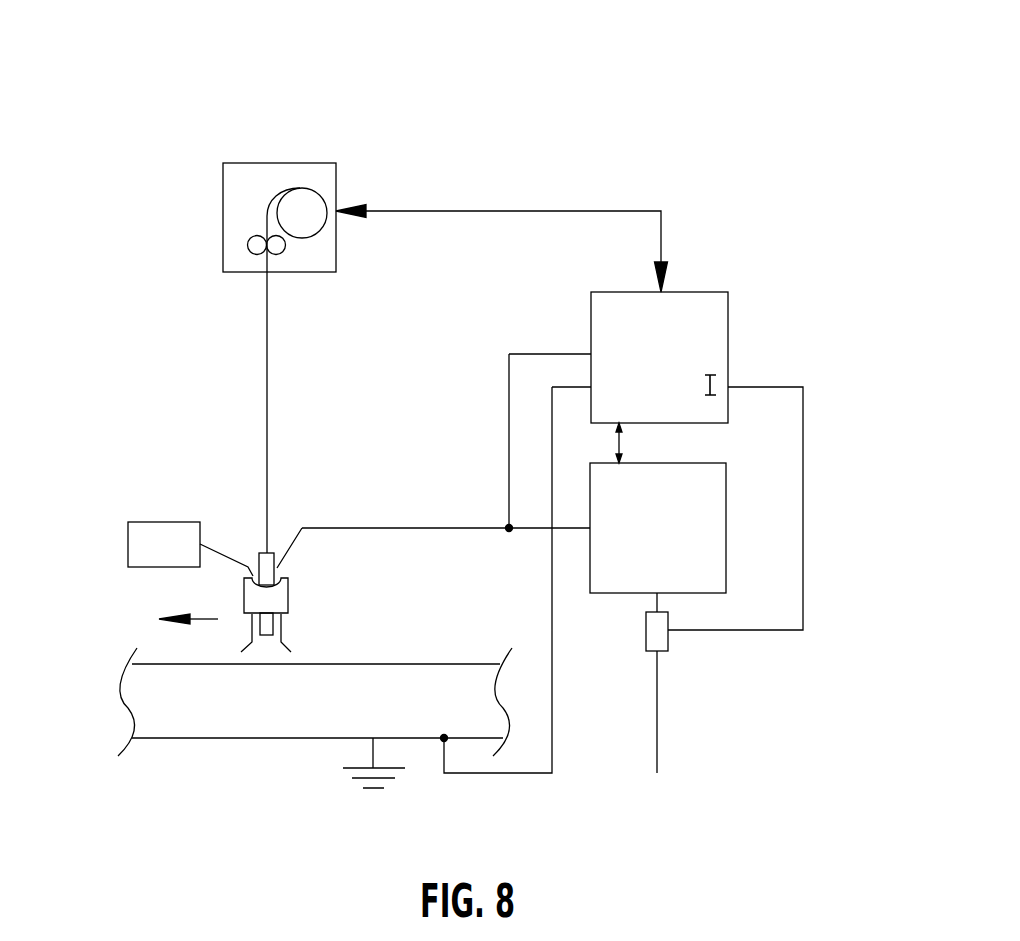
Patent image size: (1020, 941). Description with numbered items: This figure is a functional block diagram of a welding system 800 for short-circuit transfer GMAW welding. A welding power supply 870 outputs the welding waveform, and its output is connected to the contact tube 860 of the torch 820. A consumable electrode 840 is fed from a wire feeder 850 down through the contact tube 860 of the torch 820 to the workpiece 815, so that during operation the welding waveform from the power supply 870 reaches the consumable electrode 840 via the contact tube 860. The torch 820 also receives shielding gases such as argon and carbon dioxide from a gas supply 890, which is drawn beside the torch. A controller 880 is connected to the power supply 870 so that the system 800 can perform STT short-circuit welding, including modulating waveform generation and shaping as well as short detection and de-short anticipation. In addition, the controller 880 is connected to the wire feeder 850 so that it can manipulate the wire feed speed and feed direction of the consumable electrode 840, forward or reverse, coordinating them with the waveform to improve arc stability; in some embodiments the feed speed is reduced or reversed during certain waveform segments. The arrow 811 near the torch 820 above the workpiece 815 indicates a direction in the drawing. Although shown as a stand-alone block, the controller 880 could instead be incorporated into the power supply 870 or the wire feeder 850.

The welding system 800 is at (560, 145).
The wire feeder 850 is at (336, 180).
The consumable electrode 840 is at (267, 450).
The controller 880 is at (728, 316).
The welding power supply 870 is at (726, 492).
The gas supply 890 is at (128, 545).
The contact tube 860 is at (274, 570).
The torch 820 is at (288, 595).
The travel direction 811 is at (188, 636).
The workpiece 815 is at (227, 738).